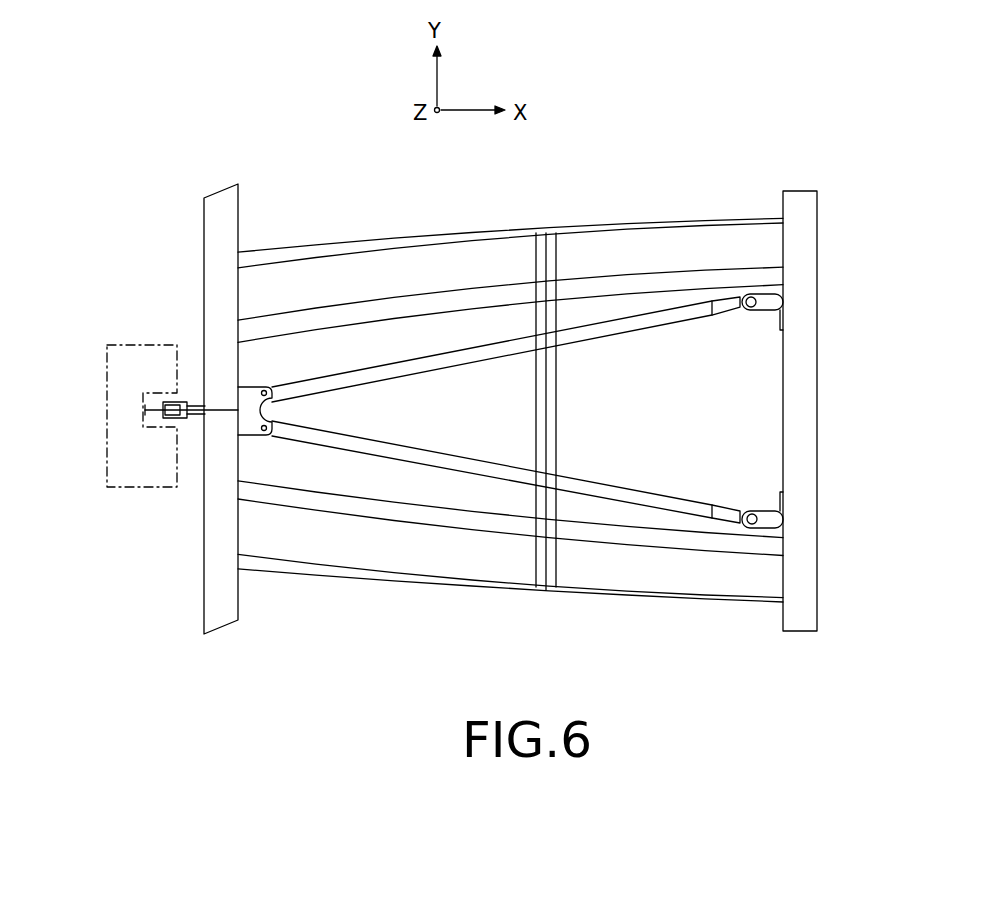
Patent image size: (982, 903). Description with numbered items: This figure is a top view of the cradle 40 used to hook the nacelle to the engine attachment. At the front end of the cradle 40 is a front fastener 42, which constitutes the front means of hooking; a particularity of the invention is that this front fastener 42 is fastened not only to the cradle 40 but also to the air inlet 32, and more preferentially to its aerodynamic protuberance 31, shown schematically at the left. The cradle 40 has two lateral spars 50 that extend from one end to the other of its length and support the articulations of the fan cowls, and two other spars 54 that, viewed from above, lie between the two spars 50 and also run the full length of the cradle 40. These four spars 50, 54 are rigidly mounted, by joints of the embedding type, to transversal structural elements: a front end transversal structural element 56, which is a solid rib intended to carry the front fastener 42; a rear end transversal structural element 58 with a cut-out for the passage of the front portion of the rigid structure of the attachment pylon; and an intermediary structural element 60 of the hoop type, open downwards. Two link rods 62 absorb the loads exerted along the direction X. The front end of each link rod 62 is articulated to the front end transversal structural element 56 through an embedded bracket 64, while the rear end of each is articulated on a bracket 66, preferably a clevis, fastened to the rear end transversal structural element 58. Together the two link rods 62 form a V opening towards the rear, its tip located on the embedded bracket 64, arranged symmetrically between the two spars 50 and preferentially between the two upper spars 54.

The aerodynamic protuberance 31 is at (115, 405).
The air inlet 32 is at (143, 370).
The cradle 40 is at (342, 208).
The front fastener 42 is at (193, 430).
The lateral spars 50 is at (447, 233).
The upper spars 54 is at (387, 310).
The front end transversal structural element 56 is at (215, 270).
The rear end transversal structural element 58 is at (800, 198).
The intermediary structural element 60 is at (553, 243).
The link rods 62 is at (425, 368).
The embedded bracket 64 is at (252, 393).
The bracket 66 is at (777, 302).